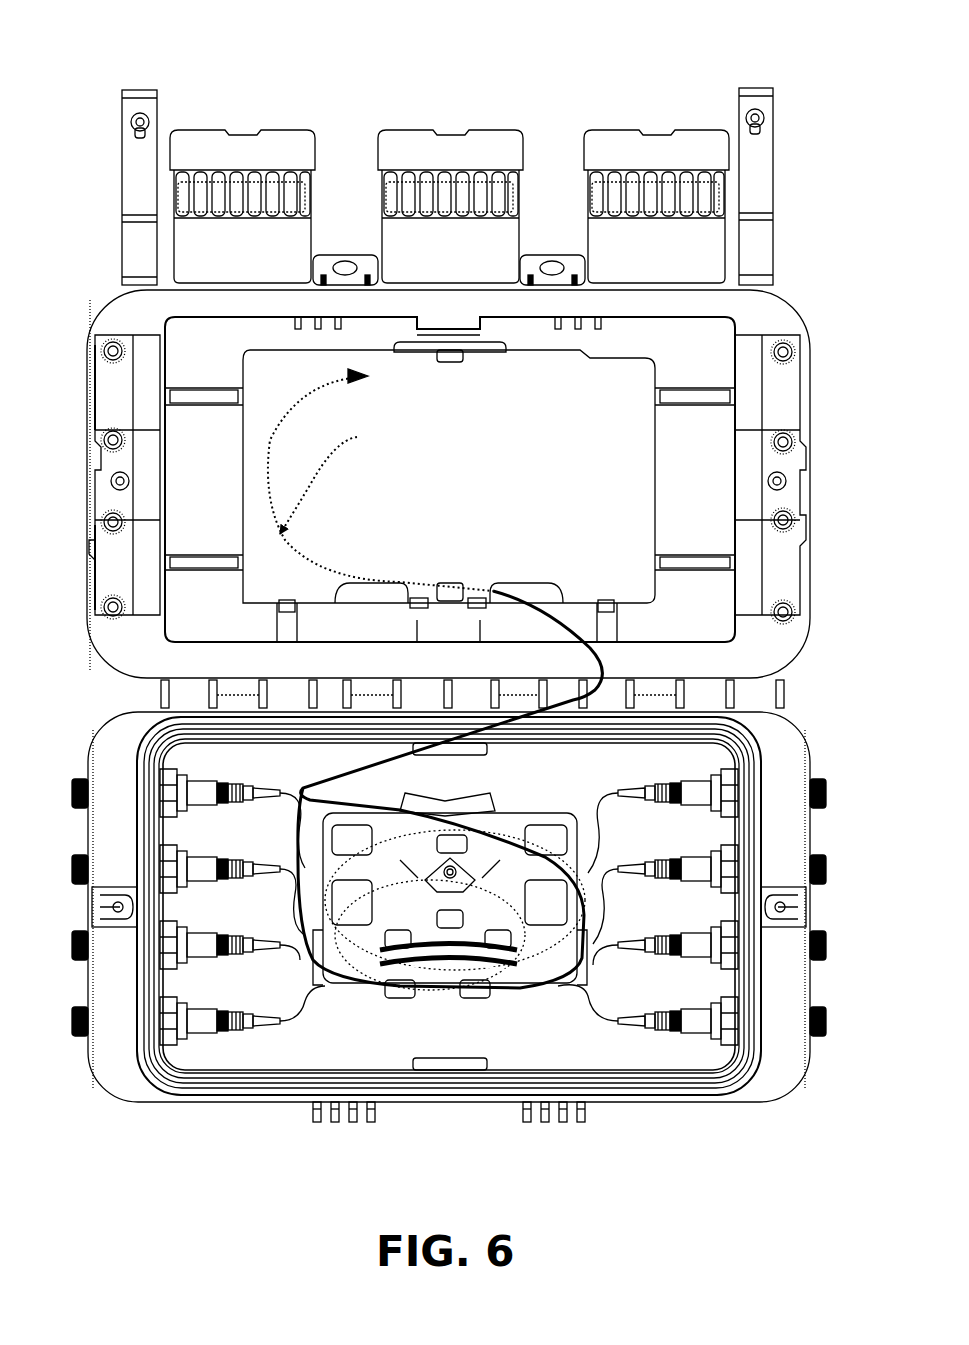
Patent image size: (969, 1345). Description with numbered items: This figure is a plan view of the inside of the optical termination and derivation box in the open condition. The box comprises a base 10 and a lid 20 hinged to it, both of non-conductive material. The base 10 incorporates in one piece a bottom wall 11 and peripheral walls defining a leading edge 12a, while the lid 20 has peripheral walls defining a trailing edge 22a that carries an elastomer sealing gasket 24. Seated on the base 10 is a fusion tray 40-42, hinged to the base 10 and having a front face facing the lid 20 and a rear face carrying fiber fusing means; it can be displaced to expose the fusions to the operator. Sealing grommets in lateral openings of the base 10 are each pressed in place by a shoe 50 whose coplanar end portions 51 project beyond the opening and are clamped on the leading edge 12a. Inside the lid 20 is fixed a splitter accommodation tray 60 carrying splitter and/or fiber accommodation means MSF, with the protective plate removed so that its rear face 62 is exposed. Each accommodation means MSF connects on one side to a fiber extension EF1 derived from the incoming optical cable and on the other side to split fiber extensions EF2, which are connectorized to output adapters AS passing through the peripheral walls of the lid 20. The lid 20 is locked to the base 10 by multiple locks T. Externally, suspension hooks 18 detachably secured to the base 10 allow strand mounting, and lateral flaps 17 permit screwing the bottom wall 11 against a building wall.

The base 10 is at (793, 284).
The bottom wall 11 is at (258, 340).
The leading edge 12a is at (129, 318).
The lateral flaps 17 is at (348, 251).
The suspension hooks 18 is at (143, 80).
The lid 20 is at (800, 1105).
The trailing edge 22a is at (473, 1070).
The sealing gasket 24 is at (227, 1090).
The fusion tray with front face and rear face 40-42 is at (592, 397).
The shoe 50 is at (113, 395).
The end portions 51 is at (114, 368).
The splitter accommodation tray 60 is at (578, 835).
The rear face 62 is at (337, 840).
The locks T is at (286, 125).
The output adapters AS is at (825, 788).
The fiber extension EF1 is at (380, 480).
The split fiber extensions EF2 is at (612, 663).
The splitter and/or fiber accommodation means MSF is at (478, 970).